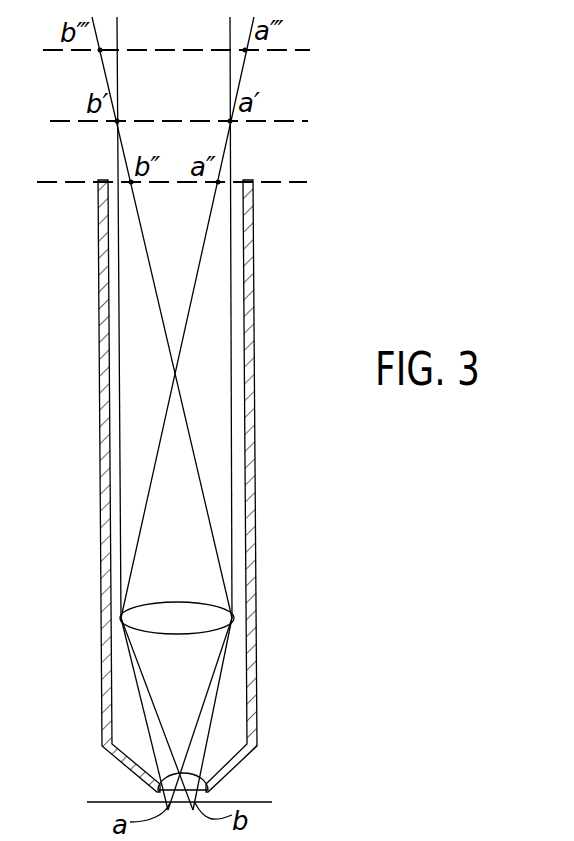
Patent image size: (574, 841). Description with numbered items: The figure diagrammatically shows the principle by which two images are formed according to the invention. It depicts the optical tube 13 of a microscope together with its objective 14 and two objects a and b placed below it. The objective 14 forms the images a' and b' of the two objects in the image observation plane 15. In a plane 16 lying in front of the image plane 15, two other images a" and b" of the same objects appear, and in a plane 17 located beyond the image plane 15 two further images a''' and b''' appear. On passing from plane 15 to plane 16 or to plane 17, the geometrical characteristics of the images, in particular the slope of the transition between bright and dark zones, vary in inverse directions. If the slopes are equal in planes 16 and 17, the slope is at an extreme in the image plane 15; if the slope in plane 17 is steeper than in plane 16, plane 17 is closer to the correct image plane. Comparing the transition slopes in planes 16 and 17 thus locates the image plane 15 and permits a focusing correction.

The optical tube 13 is at (250, 570).
The objective 14 is at (206, 776).
The image observation plane 15 is at (292, 122).
The plane in front of image plane 16 is at (290, 183).
The plane beyond image plane 17 is at (292, 51).